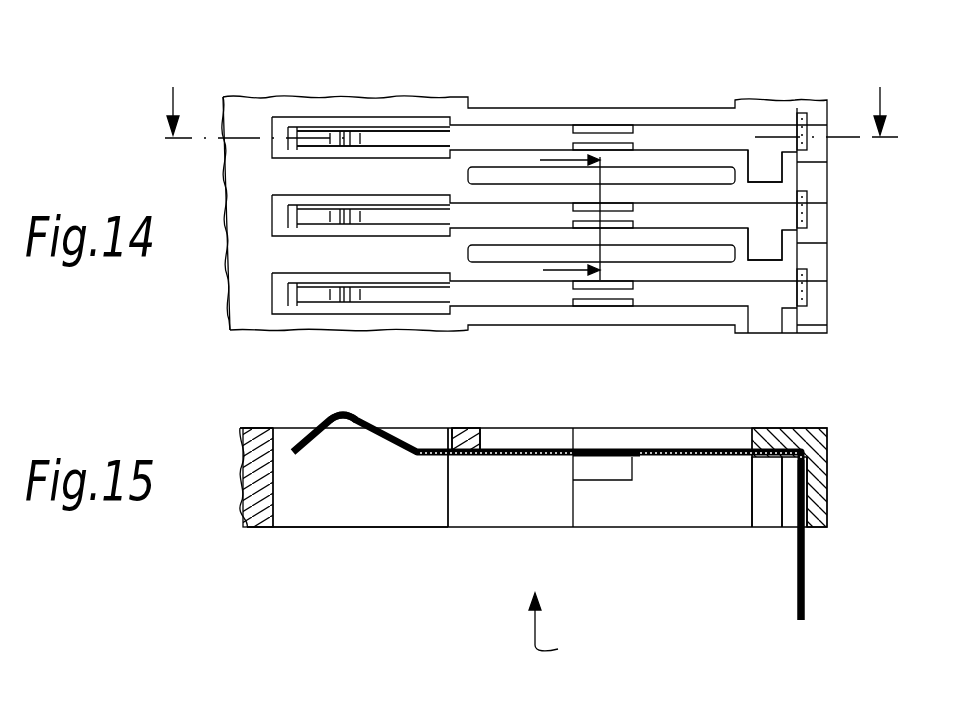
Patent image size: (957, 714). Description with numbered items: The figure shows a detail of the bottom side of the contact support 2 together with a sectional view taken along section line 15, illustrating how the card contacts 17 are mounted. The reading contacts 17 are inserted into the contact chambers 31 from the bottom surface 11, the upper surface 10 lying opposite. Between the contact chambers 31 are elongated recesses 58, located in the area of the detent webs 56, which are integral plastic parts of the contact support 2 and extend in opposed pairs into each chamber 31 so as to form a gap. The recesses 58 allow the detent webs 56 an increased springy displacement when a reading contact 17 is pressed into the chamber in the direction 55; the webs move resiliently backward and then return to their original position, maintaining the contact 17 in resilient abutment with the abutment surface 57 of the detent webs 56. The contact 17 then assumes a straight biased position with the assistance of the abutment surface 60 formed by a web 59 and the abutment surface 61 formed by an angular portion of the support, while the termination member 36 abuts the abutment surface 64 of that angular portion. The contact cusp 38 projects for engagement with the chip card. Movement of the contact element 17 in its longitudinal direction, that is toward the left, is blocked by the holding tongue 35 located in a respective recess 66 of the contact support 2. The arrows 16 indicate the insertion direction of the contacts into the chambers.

In FIG. 14, the contact support 2 is at (828, 240).
In FIG. 15, the contact support 2 is at (829, 507).
In FIG. 15, the upper surface 10 is at (262, 428).
In FIG. 14, the bottom surface 11 is at (250, 120).
In FIG. 15, the bottom surface 11 is at (263, 528).
In FIG. 14, the section line 15 is at (521, 112).
In FIG. 14, the insertion direction arrow 16 is at (546, 158).
In FIG. 14, the card contact 17 is at (415, 120).
In FIG. 15, the card contact 17 is at (523, 445).
In FIG. 14, the contact chamber 31 is at (313, 127).
In FIG. 15, the contact chamber 31 is at (332, 503).
In FIG. 14, the holding tongue 35 is at (766, 164).
In FIG. 15, the termination member 36 is at (807, 592).
In FIG. 15, the contact cusp 38 is at (351, 411).
In FIG. 15, the direction of pressing 55 is at (564, 631).
In FIG. 14, the detent web 56 is at (622, 148).
In FIG. 15, the detent web 56 is at (593, 470).
In FIG. 15, the abutment surface 57 is at (607, 450).
In FIG. 14, the recess 58 is at (670, 174).
In FIG. 15, the web 59 is at (466, 428).
In FIG. 15, the abutment surface 60 is at (468, 458).
In FIG. 15, the abutment surface 61 is at (752, 490).
In FIG. 15, the abutment surface 64 is at (795, 506).
In FIG. 14, the recess 66 is at (783, 248).
In FIG. 15, the recess 66 is at (760, 512).